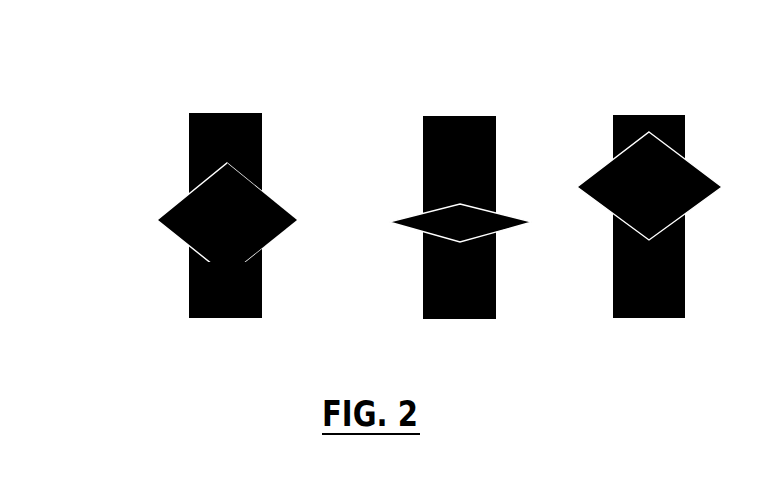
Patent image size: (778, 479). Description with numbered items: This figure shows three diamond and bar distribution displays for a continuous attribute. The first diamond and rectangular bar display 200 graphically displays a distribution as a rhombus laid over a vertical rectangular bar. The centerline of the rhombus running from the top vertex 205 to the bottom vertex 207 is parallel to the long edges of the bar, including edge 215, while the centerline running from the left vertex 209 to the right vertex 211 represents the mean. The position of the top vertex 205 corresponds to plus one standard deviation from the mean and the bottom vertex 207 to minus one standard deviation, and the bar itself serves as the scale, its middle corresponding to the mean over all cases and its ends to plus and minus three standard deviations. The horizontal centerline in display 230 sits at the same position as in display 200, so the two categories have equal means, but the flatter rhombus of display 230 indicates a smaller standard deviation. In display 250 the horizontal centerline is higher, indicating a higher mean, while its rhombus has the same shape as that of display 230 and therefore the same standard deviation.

The diamond and rectangular bar display 200 is at (208, 113).
The top vertex 205 is at (335, 162).
The bottom vertex 207 is at (262, 287).
The left vertex 209 is at (158, 221).
The right vertex 211 is at (370, 236).
The edge 215 is at (189, 274).
The display 230 is at (443, 116).
The display 250 is at (632, 115).